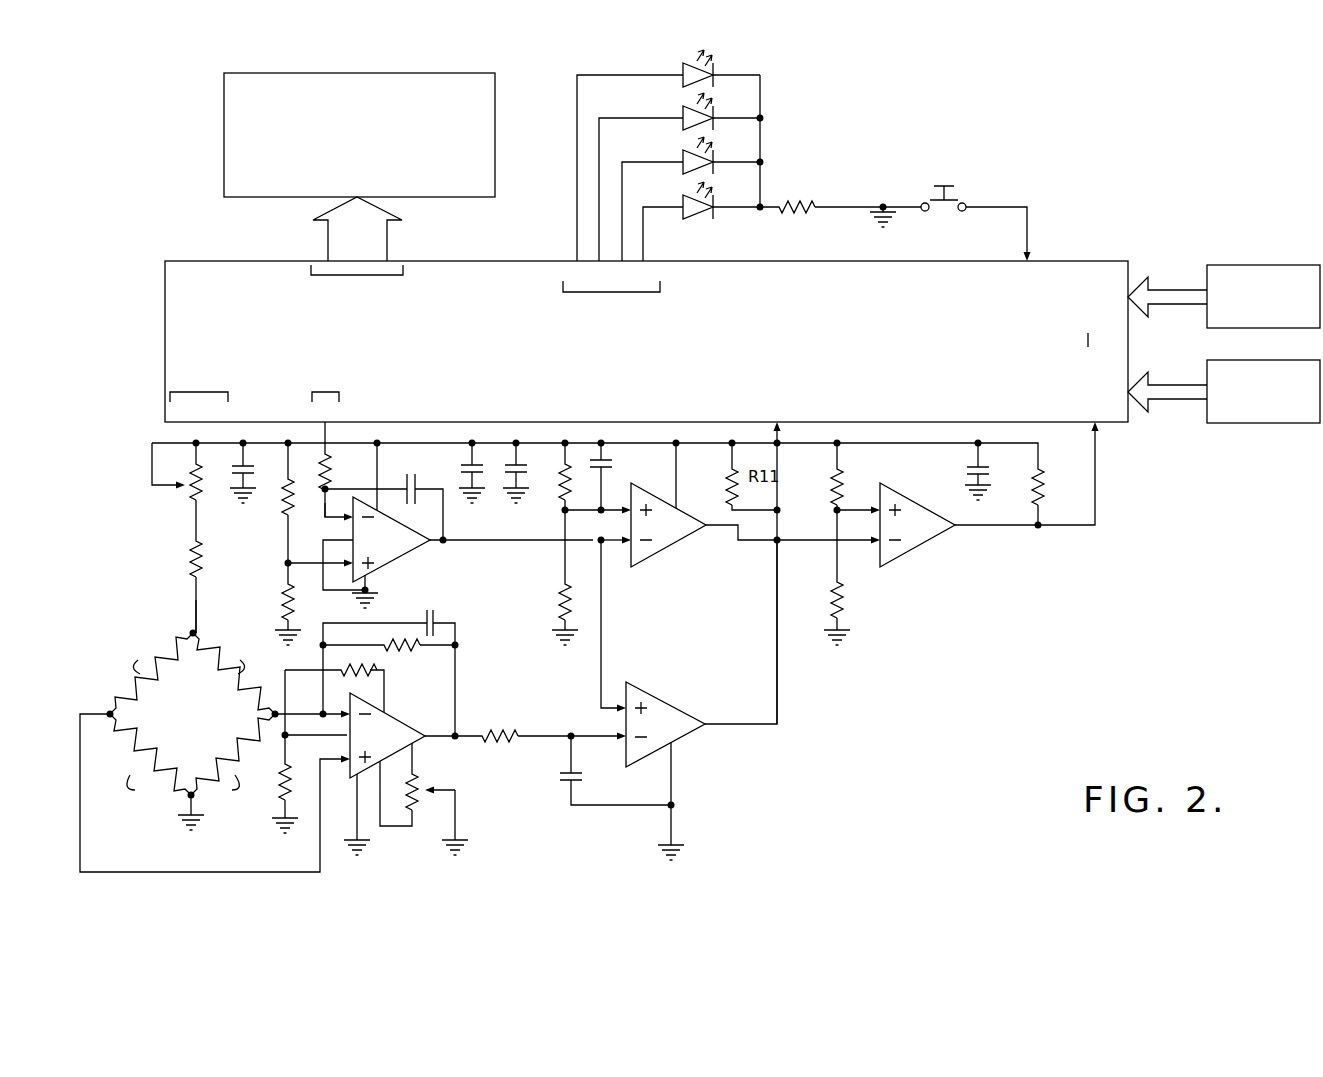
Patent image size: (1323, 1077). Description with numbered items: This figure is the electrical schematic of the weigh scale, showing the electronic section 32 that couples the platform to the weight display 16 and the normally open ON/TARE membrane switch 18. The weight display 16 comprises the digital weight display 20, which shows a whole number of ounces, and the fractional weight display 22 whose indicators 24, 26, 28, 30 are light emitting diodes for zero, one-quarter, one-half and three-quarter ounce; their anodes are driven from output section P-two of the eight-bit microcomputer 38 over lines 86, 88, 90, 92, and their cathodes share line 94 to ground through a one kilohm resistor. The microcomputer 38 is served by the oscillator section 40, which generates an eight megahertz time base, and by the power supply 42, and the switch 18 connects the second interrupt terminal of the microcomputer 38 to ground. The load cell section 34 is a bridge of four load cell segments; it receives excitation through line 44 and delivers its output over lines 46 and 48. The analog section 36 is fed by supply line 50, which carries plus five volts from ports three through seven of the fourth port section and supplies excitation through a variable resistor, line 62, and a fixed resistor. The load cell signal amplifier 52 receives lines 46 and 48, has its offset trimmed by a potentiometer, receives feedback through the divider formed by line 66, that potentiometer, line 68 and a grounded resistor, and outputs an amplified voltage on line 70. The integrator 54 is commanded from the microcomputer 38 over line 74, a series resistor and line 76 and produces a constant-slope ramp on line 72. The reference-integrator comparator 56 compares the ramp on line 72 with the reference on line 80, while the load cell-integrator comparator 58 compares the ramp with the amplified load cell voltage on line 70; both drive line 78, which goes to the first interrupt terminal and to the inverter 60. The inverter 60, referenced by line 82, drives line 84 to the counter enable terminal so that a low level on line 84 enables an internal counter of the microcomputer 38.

The weight display 16 is at (882, 88).
The ON/TARE membrane switch 18 is at (944, 181).
The digital weight display 20 is at (495, 127).
The fractional weight display 22 is at (793, 48).
The fractional weight display indicator 24 is at (683, 56).
The fractional weight display indicator 26 is at (713, 118).
The fractional weight display indicator 28 is at (713, 162).
The fractional weight display indicator 30 is at (713, 207).
The electronic section 32 is at (1130, 148).
The load cell section 34 is at (172, 627).
The analog section 36 is at (920, 713).
The 8-bit microcomputer 38 is at (213, 260).
The oscillator section 40 is at (1270, 264).
The power supply 42 is at (1277, 424).
The line 44 is at (198, 626).
The line 46 is at (300, 712).
The line 48 is at (215, 873).
The supply line 50 is at (152, 458).
The load cell signal amplifier 52 is at (425, 740).
The integrator 54 is at (390, 558).
The reference-integrator comparator 56 is at (670, 543).
The load cell-integrator comparator 58 is at (700, 680).
The inverter 60 is at (912, 548).
The line 62 is at (196, 517).
The line 66 is at (385, 692).
The line 68 is at (297, 668).
The line 70 is at (535, 736).
The line 72 is at (288, 550).
The line 74 is at (327, 440).
The line 76 is at (325, 510).
The line 78 is at (777, 663).
The line 80 is at (565, 555).
The line 82 is at (835, 553).
The line 84 is at (1075, 528).
The line 86 is at (620, 75).
The line 88 is at (625, 118).
The line 90 is at (640, 162).
The line 92 is at (645, 230).
The line 94 is at (760, 183).